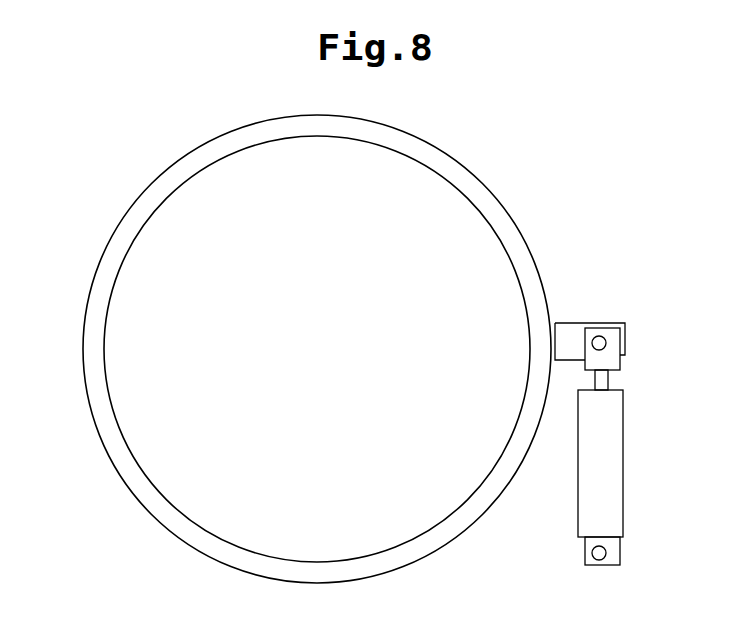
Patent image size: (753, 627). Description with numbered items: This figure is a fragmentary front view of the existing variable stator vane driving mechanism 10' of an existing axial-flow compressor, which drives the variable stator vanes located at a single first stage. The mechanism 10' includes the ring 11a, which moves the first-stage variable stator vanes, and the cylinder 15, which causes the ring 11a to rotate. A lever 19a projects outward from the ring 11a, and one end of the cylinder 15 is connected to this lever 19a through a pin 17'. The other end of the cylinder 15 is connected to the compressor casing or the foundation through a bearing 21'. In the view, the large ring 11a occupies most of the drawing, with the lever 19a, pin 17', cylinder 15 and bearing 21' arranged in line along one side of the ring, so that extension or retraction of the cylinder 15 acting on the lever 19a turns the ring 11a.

The existing variable stator vane driving mechanism 10' is at (372, 349).
The ring 11a is at (514, 213).
The lever 19a is at (602, 324).
The pin 17' is at (633, 343).
The cylinder 15 is at (623, 462).
The bearing 21' is at (638, 558).